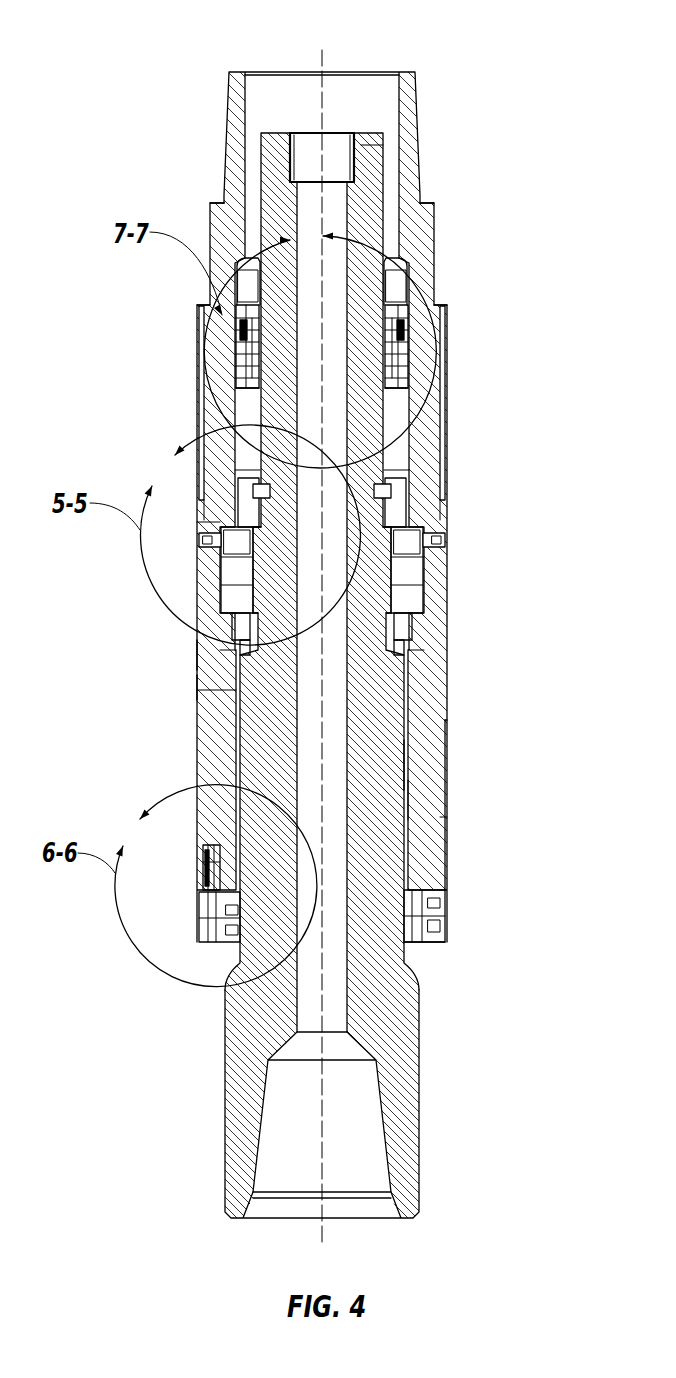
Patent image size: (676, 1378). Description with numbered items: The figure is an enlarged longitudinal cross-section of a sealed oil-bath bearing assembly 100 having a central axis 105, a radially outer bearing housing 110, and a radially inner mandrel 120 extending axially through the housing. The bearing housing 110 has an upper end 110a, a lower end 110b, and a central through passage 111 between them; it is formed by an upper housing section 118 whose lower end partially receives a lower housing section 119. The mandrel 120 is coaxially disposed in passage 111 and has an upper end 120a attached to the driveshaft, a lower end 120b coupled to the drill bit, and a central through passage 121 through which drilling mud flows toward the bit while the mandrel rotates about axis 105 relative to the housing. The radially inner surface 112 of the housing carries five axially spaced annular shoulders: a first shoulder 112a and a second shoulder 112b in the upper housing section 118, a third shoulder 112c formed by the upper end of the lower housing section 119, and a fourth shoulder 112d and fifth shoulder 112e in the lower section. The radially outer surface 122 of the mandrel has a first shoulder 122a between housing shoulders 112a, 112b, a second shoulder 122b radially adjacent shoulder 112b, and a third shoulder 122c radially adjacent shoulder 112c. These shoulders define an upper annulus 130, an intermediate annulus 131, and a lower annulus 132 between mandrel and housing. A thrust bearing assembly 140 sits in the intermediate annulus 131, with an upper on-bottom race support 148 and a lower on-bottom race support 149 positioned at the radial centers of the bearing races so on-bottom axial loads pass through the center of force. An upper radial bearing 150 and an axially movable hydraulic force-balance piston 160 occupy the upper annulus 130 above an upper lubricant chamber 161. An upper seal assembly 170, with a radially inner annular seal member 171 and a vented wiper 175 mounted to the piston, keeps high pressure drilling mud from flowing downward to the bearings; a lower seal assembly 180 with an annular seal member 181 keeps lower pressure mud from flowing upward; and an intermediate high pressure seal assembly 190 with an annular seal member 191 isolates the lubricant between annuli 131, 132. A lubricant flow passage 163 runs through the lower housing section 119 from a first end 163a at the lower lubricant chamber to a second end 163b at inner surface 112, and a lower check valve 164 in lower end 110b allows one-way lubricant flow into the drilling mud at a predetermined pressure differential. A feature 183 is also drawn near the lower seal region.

The bearing assembly 100 is at (192, 683).
The central or longitudinal axis 105 is at (322, 1228).
The bearing housing 110 is at (214, 592).
The upper end of bearing housing 110a is at (415, 117).
The lower end of bearing housing 110b is at (197, 903).
The central through passage of housing 111 is at (290, 100).
The radially inner surface of housing 112 is at (437, 413).
The first annular shoulder of housing 112a is at (407, 253).
The second annular shoulder of housing 112b is at (197, 522).
The third annular shoulder of housing 112c is at (197, 653).
The fourth annular shoulder of housing 112d is at (443, 662).
The fifth annular shoulder of housing 112e is at (443, 817).
The upper housing section 118 is at (392, 280).
The lower housing section 119 is at (430, 800).
The mandrel 120 is at (400, 1108).
The upper end of mandrel 120a is at (367, 173).
The lower end of mandrel 120b is at (420, 1190).
The central through passage of mandrel 121 is at (332, 160).
The radially outer surface of mandrel 122 is at (235, 958).
The first annular shoulder of mandrel 122a is at (445, 490).
The second annular shoulder of mandrel 122b is at (443, 547).
The third annular shoulder of mandrel 122c is at (430, 577).
The upper annulus 130 is at (433, 307).
The intermediate annulus 131 is at (185, 588).
The lower annulus 132 is at (443, 720).
The thrust bearing assembly 140 is at (212, 557).
The upper annular on-bottom race support 148 is at (410, 510).
The lower annular on-bottom race support 149 is at (443, 605).
The upper radial bearing 150 is at (232, 372).
The hydraulic force-balance piston 160 is at (438, 377).
The upper lubricant reservoir or chamber 161 is at (232, 407).
The lubricant flow passage 163 is at (197, 778).
The first end of lubricant flow passage 163a is at (140, 868).
The second end of lubricant flow passage 163b is at (227, 688).
The lower check valve 164 is at (443, 867).
The upper seal assembly 170 is at (212, 311).
The radially inner annular seal member 171 is at (232, 335).
The wiper 175 is at (438, 343).
The lower seal assembly 180 is at (453, 858).
The annular seal member 181 is at (436, 852).
The retaining groove 183 is at (438, 885).
The intermediate seal assembly 190 is at (430, 627).
The annular seal member 191 is at (443, 643).